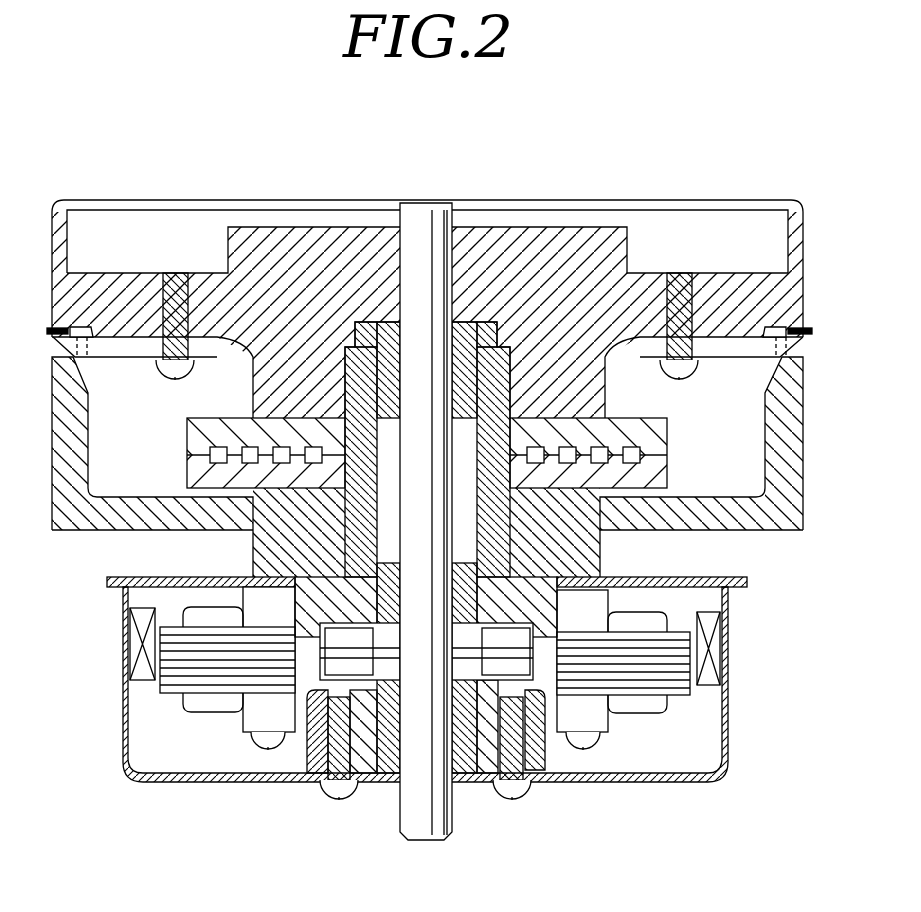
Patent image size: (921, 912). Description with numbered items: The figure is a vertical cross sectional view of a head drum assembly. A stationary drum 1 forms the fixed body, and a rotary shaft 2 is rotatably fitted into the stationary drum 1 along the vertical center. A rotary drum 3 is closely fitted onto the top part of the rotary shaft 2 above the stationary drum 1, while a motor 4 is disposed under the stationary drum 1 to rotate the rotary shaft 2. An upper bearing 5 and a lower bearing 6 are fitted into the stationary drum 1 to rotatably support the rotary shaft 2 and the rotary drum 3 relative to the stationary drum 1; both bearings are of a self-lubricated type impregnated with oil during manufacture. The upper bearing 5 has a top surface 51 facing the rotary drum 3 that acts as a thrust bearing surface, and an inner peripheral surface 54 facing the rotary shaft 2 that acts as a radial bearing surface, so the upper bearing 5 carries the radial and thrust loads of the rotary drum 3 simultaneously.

The stationary drum 1 is at (803, 468).
The rotary shaft 2 is at (418, 212).
The rotary drum 3 is at (806, 268).
The motor 4 is at (681, 712).
The upper bearing 5 is at (497, 313).
The top surface 51 is at (458, 318).
The inner peripheral surface 54 is at (453, 353).
The lower bearing 6 is at (388, 600).